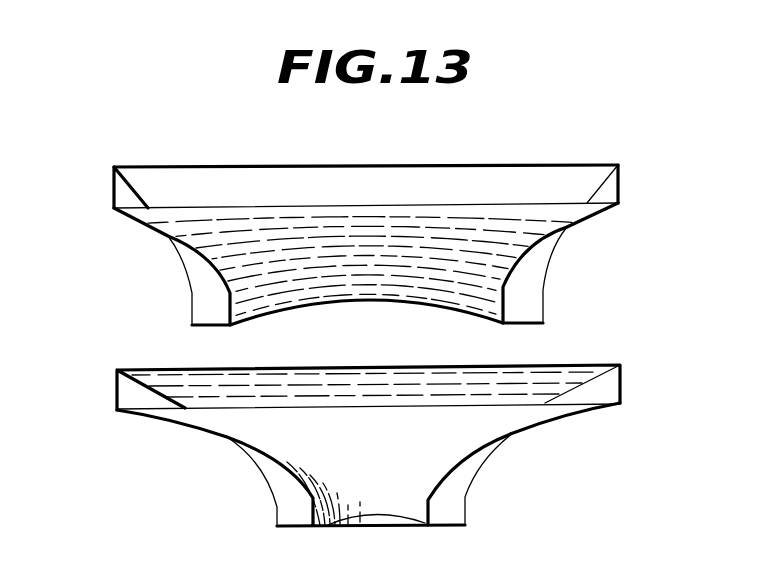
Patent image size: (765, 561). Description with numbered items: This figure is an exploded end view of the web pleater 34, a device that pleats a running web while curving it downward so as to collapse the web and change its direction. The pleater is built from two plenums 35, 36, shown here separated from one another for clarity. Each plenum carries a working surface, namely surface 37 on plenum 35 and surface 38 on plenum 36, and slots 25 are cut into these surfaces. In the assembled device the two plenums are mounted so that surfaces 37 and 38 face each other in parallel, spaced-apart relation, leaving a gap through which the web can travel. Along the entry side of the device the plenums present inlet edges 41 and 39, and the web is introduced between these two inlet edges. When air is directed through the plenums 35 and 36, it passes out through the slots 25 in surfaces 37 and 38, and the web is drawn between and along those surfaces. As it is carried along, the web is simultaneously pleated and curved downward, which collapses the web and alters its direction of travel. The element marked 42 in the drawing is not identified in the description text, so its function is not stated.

The slots 25 is at (437, 373).
The web pleater 34 is at (578, 317).
The plenum 35 is at (418, 165).
The plenum 36 is at (537, 427).
The surface 37 is at (330, 277).
The surface 38 is at (172, 380).
The inlet edge 39 is at (390, 365).
The inlet edge 41 is at (503, 203).
The lower edge of upper member 42 is at (377, 302).